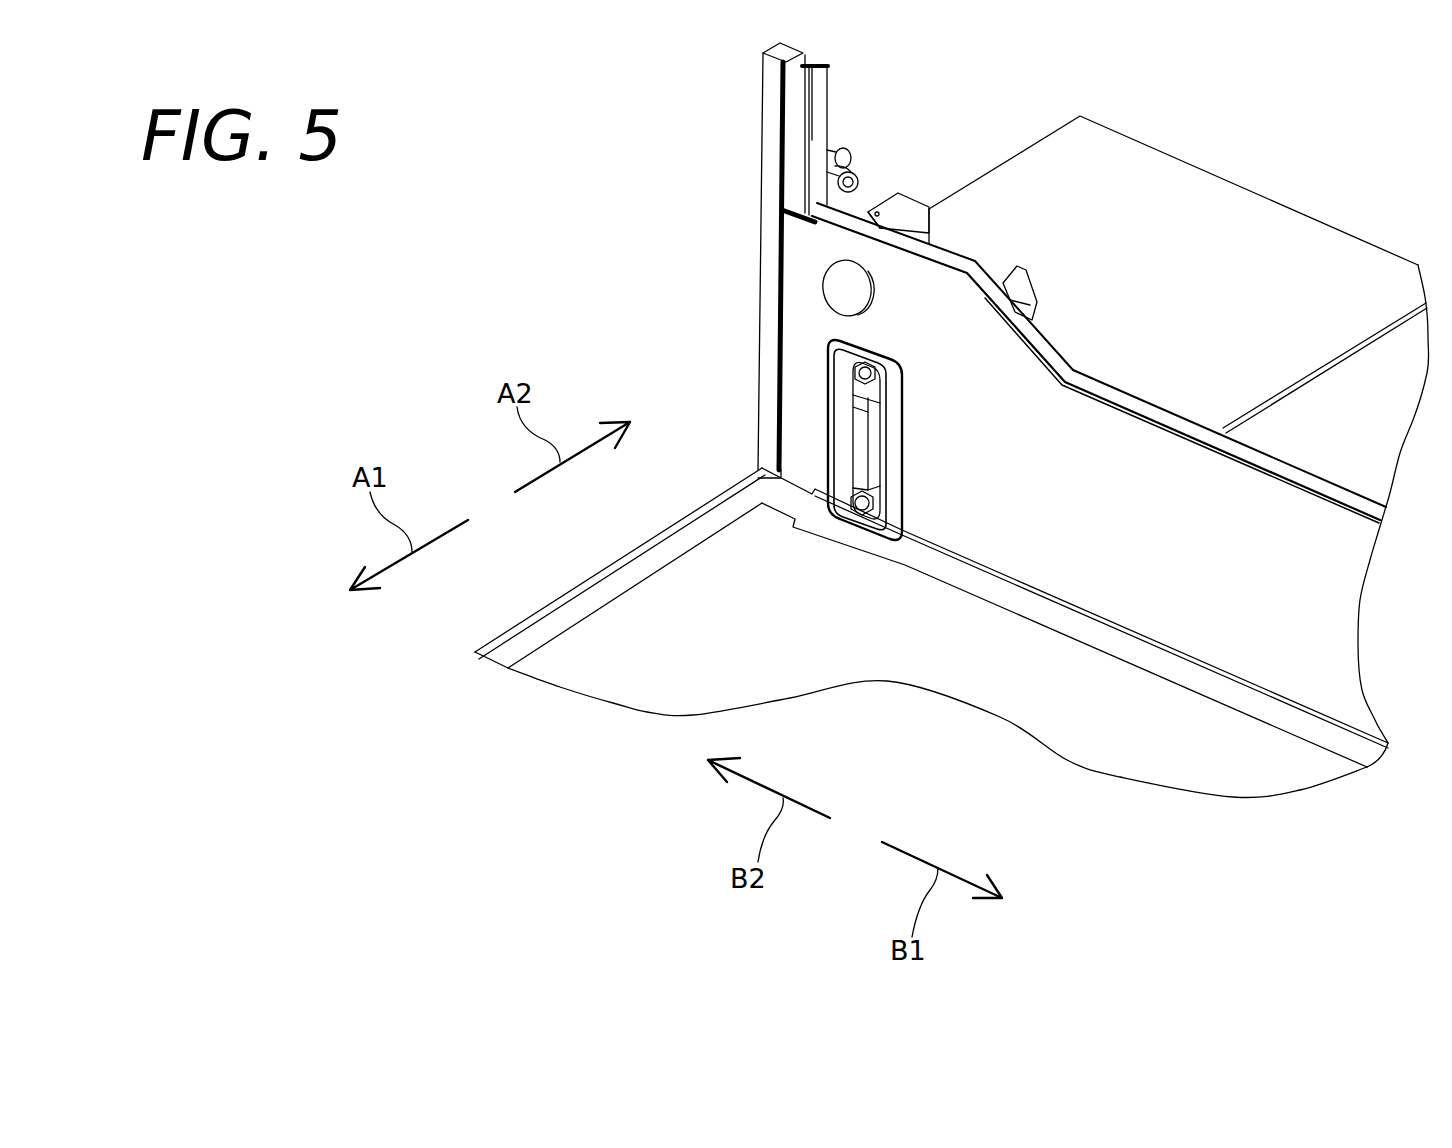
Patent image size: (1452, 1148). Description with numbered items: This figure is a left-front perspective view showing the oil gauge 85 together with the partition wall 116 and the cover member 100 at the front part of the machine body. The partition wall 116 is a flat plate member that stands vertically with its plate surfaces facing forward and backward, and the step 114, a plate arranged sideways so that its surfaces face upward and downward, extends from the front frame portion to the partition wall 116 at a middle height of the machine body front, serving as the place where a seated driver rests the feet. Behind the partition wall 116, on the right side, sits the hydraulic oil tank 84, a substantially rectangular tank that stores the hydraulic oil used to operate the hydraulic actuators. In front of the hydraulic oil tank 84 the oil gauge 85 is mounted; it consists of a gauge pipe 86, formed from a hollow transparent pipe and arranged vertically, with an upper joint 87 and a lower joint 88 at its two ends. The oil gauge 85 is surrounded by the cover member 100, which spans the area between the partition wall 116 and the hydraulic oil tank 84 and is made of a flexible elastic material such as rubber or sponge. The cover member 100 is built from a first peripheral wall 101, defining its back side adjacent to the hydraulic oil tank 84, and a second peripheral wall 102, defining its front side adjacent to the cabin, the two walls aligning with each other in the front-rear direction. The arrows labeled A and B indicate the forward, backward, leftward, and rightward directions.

The hydraulic oil tank 84 is at (1252, 189).
The oil gauge 85 is at (867, 447).
The gauge pipe 86 is at (860, 412).
The upper joint 87 is at (848, 393).
The lower joint 88 is at (850, 480).
The cover member 100 is at (737, 403).
The first peripheral wall 101 is at (833, 338).
The second peripheral wall 102 is at (838, 360).
The step 114 is at (640, 547).
The partition wall 116 is at (1330, 478).